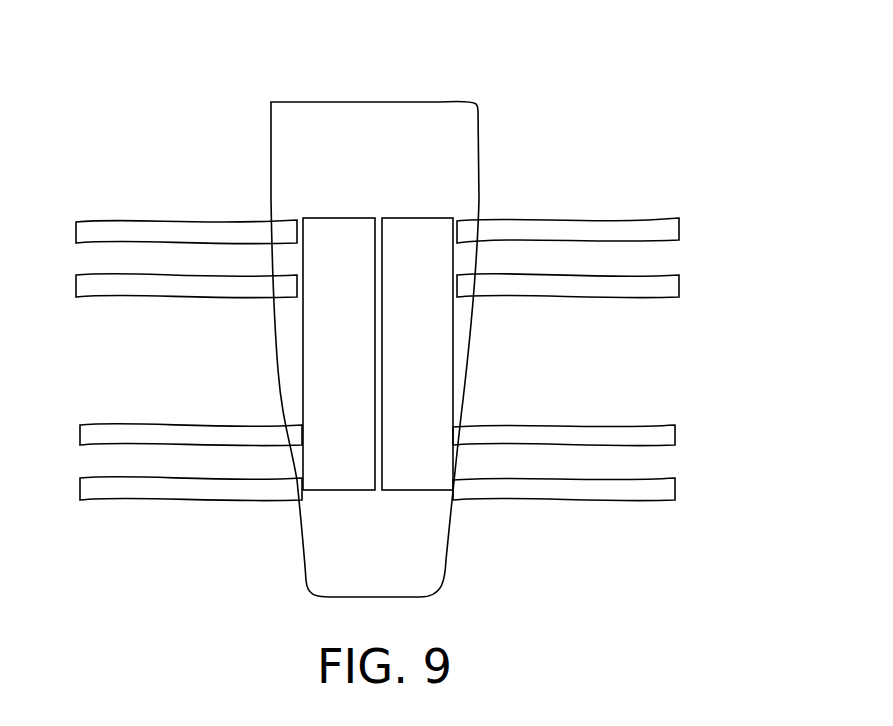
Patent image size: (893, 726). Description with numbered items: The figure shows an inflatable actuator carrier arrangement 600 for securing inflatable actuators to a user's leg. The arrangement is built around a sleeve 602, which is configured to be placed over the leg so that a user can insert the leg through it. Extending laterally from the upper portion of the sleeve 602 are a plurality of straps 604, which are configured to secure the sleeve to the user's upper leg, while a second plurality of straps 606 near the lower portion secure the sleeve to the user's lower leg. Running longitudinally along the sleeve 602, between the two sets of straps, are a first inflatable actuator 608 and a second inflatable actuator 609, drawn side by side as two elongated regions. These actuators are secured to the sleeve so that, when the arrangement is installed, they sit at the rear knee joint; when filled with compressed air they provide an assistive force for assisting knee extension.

The inflatable actuator carrier arrangement 600 is at (195, 88).
The sleeve 602 is at (467, 157).
The straps 604 is at (673, 213).
The straps 606 is at (665, 417).
The first inflatable actuator 608 is at (310, 346).
The second inflatable actuator 609 is at (442, 388).